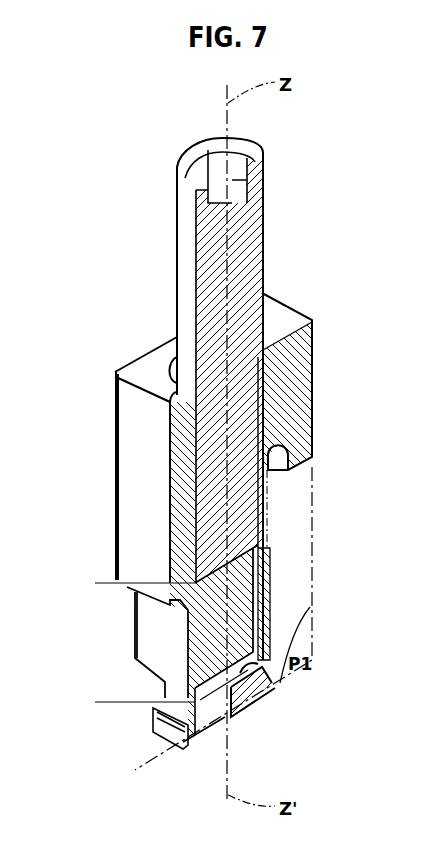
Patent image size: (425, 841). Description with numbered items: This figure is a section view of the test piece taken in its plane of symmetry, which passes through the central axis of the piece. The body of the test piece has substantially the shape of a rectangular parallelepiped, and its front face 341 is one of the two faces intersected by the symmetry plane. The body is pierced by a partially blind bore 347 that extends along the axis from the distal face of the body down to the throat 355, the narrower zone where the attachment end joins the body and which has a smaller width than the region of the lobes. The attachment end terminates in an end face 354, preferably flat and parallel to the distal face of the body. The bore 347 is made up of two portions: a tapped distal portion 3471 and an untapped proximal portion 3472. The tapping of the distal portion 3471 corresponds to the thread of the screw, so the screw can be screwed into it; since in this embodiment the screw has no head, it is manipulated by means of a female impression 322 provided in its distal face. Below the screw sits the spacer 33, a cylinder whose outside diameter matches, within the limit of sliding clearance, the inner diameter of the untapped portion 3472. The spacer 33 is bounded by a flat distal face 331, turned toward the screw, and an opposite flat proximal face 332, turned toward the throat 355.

The female impression 322 is at (244, 168).
The front face 341 is at (100, 494).
The tapped distal portion 3471 is at (268, 352).
The flat distal face 331 is at (252, 578).
The spacer 33 is at (248, 612).
The untapped proximal portion 3472 is at (97, 583).
The throat 355 is at (165, 688).
The partially blind bore 347 is at (260, 676).
The end face 354 is at (255, 715).
The flat proximal face 332 is at (213, 674).